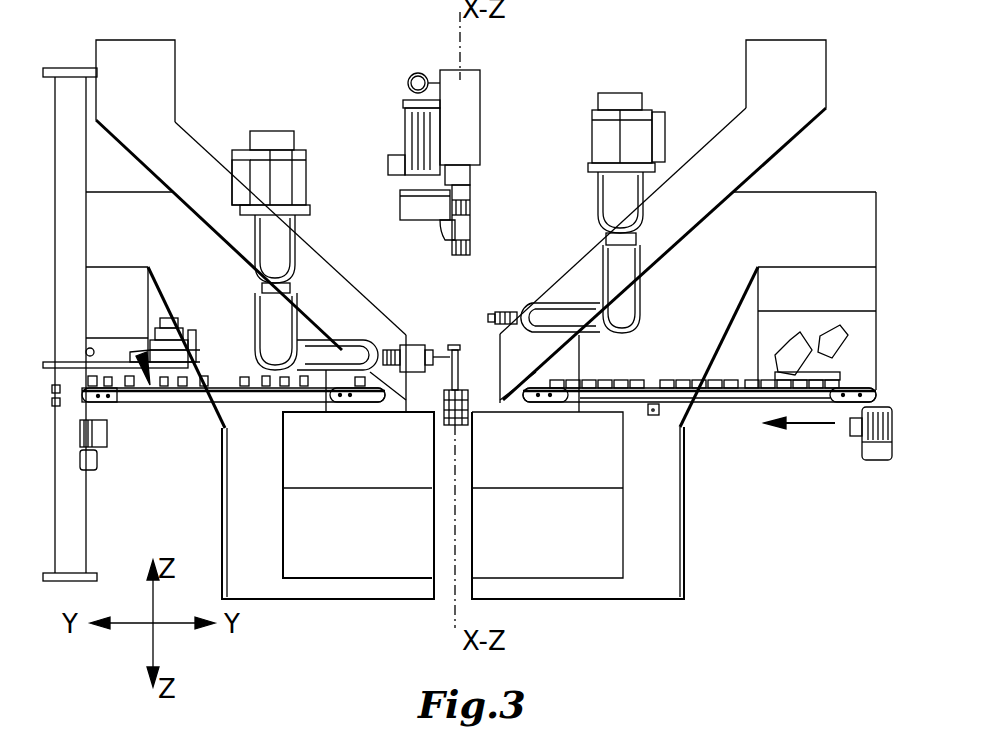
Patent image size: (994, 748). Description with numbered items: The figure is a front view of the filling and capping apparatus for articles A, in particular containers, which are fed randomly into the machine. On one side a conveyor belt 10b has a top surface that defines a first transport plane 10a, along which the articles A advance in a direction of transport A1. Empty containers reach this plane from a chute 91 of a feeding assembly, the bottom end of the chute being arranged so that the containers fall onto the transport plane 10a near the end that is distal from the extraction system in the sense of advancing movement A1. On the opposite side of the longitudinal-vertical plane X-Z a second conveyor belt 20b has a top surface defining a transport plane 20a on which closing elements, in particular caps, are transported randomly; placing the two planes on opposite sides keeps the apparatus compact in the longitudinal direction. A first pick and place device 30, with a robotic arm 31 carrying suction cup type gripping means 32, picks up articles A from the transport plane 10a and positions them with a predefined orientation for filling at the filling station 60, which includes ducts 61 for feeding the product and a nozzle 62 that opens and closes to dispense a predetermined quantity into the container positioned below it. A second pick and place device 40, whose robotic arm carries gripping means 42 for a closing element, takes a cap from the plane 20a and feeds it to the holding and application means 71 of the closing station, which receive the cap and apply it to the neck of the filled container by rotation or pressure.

The first transport plane 10a is at (850, 368).
The conveyor belt 10b is at (702, 405).
The transport plane for closing elements 20a is at (135, 350).
The conveyor belt 20b is at (233, 434).
The first pick and place device 30 is at (615, 166).
The robotic arm 31 is at (627, 290).
The gripping means 32 is at (495, 320).
The second pick and place device 40 is at (250, 100).
The gripping means for gripping a closing element 42 is at (437, 345).
The filling station 60 is at (446, 178).
The ducts 61 is at (445, 230).
The nozzle 62 is at (450, 243).
The holding and application means 71 is at (470, 255).
The chute 91 is at (843, 323).
The articles A is at (742, 392).
The direction of transport A1 is at (800, 439).